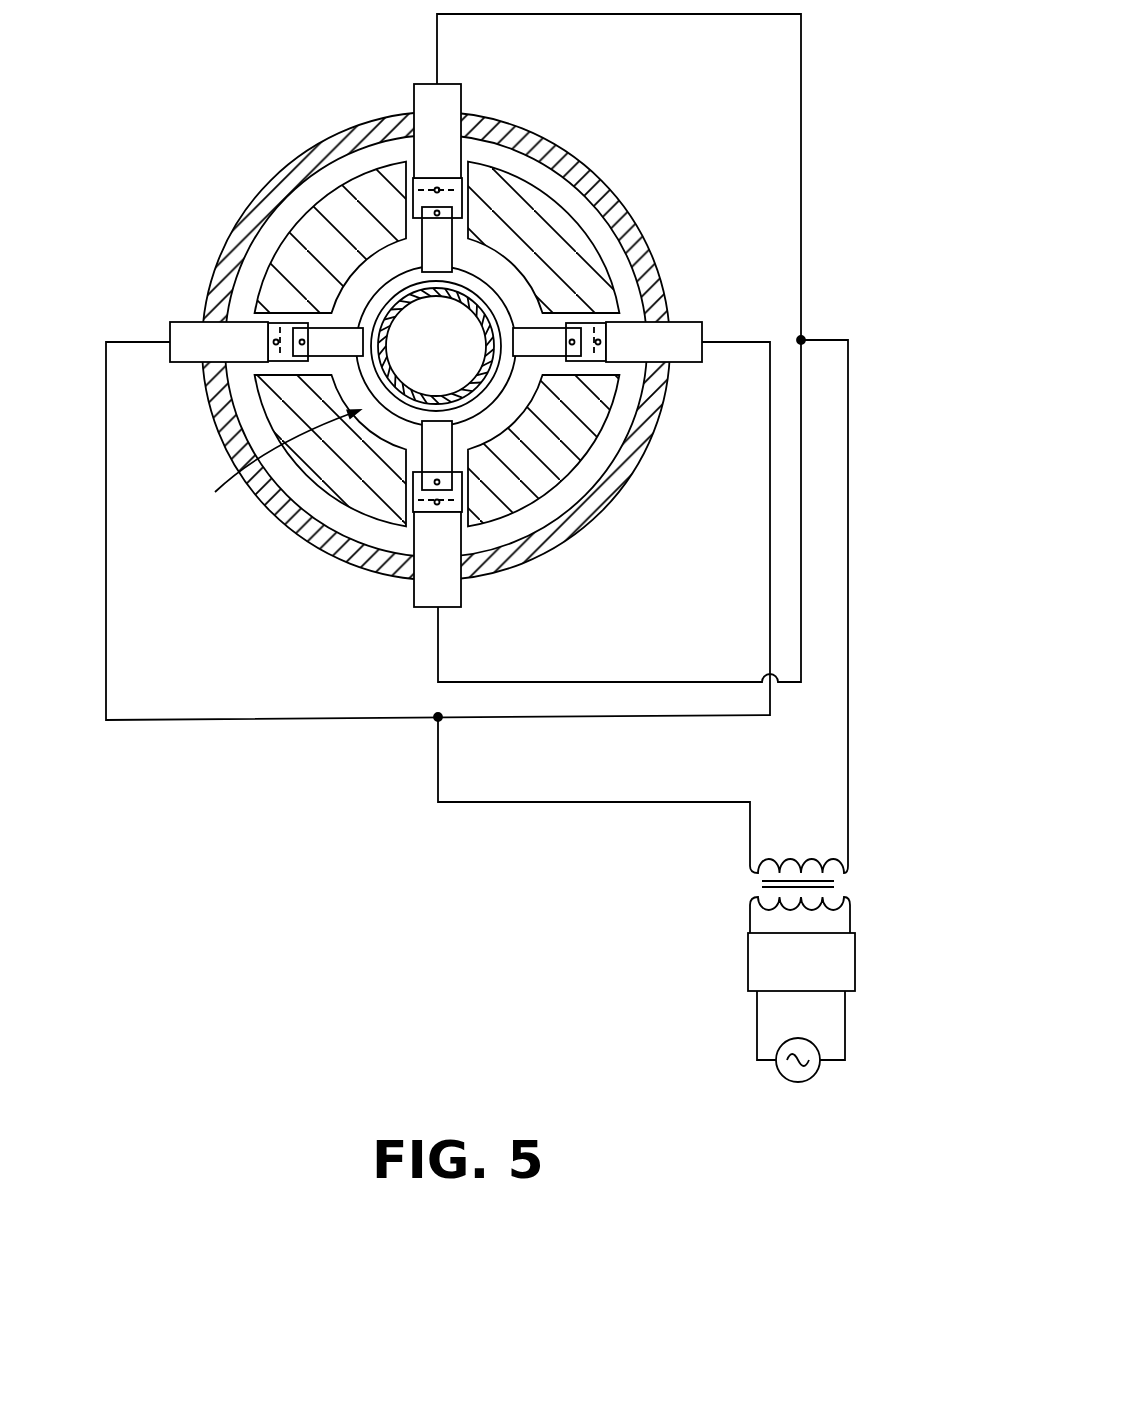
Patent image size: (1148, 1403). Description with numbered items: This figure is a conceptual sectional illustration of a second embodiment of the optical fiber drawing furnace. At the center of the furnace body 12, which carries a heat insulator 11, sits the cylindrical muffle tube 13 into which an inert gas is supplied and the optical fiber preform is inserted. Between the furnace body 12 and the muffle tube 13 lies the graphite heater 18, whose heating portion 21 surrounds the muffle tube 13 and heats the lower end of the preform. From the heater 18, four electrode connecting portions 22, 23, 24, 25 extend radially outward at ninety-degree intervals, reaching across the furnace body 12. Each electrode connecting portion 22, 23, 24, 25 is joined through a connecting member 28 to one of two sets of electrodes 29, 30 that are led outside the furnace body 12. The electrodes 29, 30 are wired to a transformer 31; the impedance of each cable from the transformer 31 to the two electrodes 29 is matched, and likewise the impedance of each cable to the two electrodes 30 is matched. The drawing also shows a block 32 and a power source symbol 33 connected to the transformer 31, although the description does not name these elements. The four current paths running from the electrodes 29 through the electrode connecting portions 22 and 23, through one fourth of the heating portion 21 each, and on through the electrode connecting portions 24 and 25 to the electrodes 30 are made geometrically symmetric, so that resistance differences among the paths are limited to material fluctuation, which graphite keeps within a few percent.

The heat insulator 11 is at (318, 470).
The furnace body 12 is at (612, 190).
The muffle tube 13 is at (469, 295).
The heater 18 is at (266, 465).
The heating portion 21 is at (500, 397).
The electrode connecting portion 22 is at (555, 335).
The electrode connecting portion 23 is at (320, 332).
The electrode connecting portion 24 is at (435, 455).
The electrode connecting portion 25 is at (438, 233).
The connecting member 28 is at (452, 193).
The electrode 29 is at (178, 323).
The electrode 30 is at (430, 88).
The transformer 31 is at (863, 866).
The drive circuit 32 is at (855, 962).
The AC power source 33 is at (782, 1080).